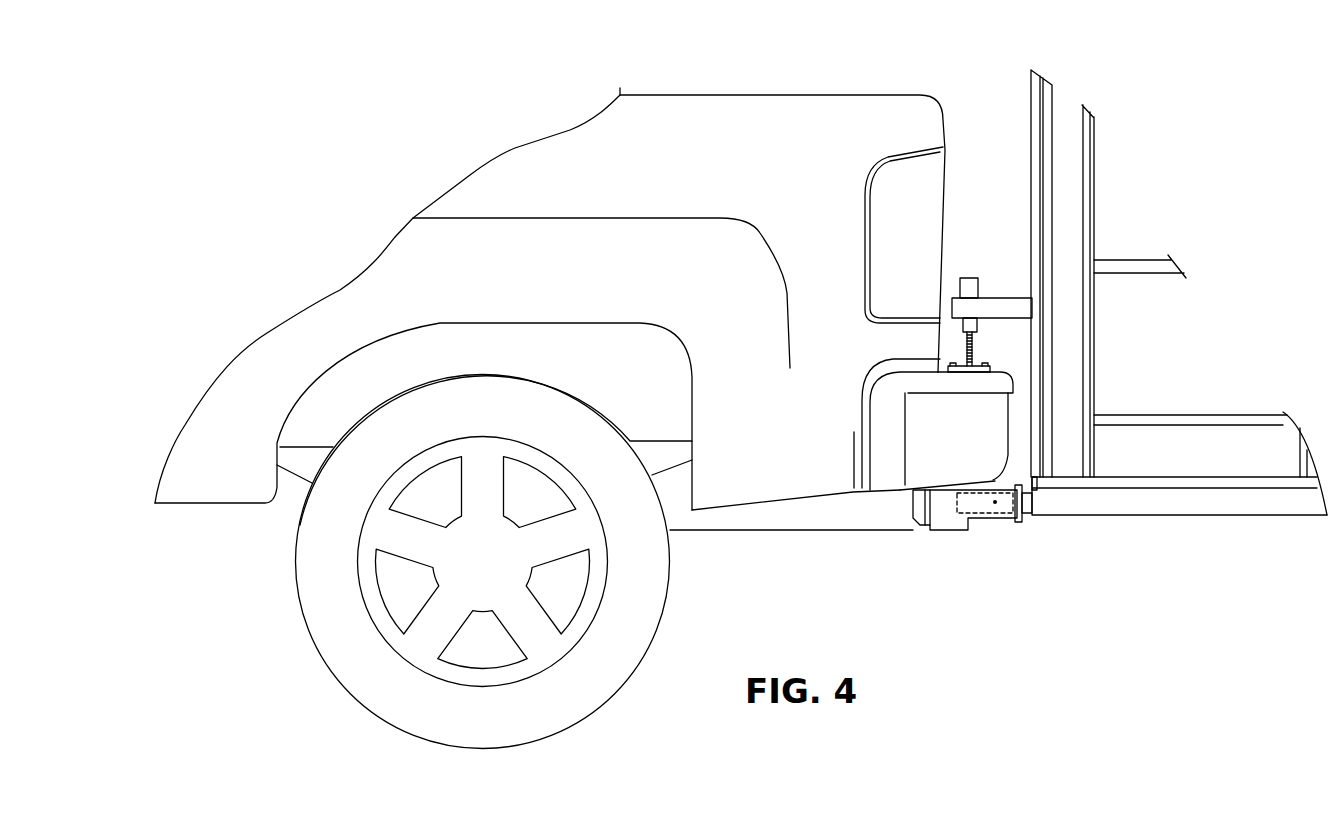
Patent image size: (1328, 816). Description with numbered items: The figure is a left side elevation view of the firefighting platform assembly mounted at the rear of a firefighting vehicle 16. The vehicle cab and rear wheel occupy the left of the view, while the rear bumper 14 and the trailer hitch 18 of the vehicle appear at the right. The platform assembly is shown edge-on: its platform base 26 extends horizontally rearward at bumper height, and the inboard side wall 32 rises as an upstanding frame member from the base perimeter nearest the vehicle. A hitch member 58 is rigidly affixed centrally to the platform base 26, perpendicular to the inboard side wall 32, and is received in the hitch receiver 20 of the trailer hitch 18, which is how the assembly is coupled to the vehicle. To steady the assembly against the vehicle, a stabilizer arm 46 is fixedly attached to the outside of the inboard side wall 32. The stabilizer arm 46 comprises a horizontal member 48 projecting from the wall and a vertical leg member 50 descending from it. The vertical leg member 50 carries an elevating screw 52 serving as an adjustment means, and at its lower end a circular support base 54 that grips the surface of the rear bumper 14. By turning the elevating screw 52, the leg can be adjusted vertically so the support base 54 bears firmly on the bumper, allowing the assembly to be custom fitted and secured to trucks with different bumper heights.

The rear bumper 14 is at (900, 490).
The firefighting vehicle 16 is at (777, 82).
The trailer hitch 18 is at (947, 518).
The hitch receiver 20 is at (985, 518).
The platform base 26 is at (1177, 515).
The inboard side wall 32 is at (1041, 143).
The stabilizer arm 46 is at (1002, 312).
The horizontal member 48 is at (1017, 300).
The vertical leg member 50 is at (963, 343).
The elevating screw 52 is at (975, 353).
The circular support base 54 is at (978, 373).
The hitch member 58 is at (997, 515).